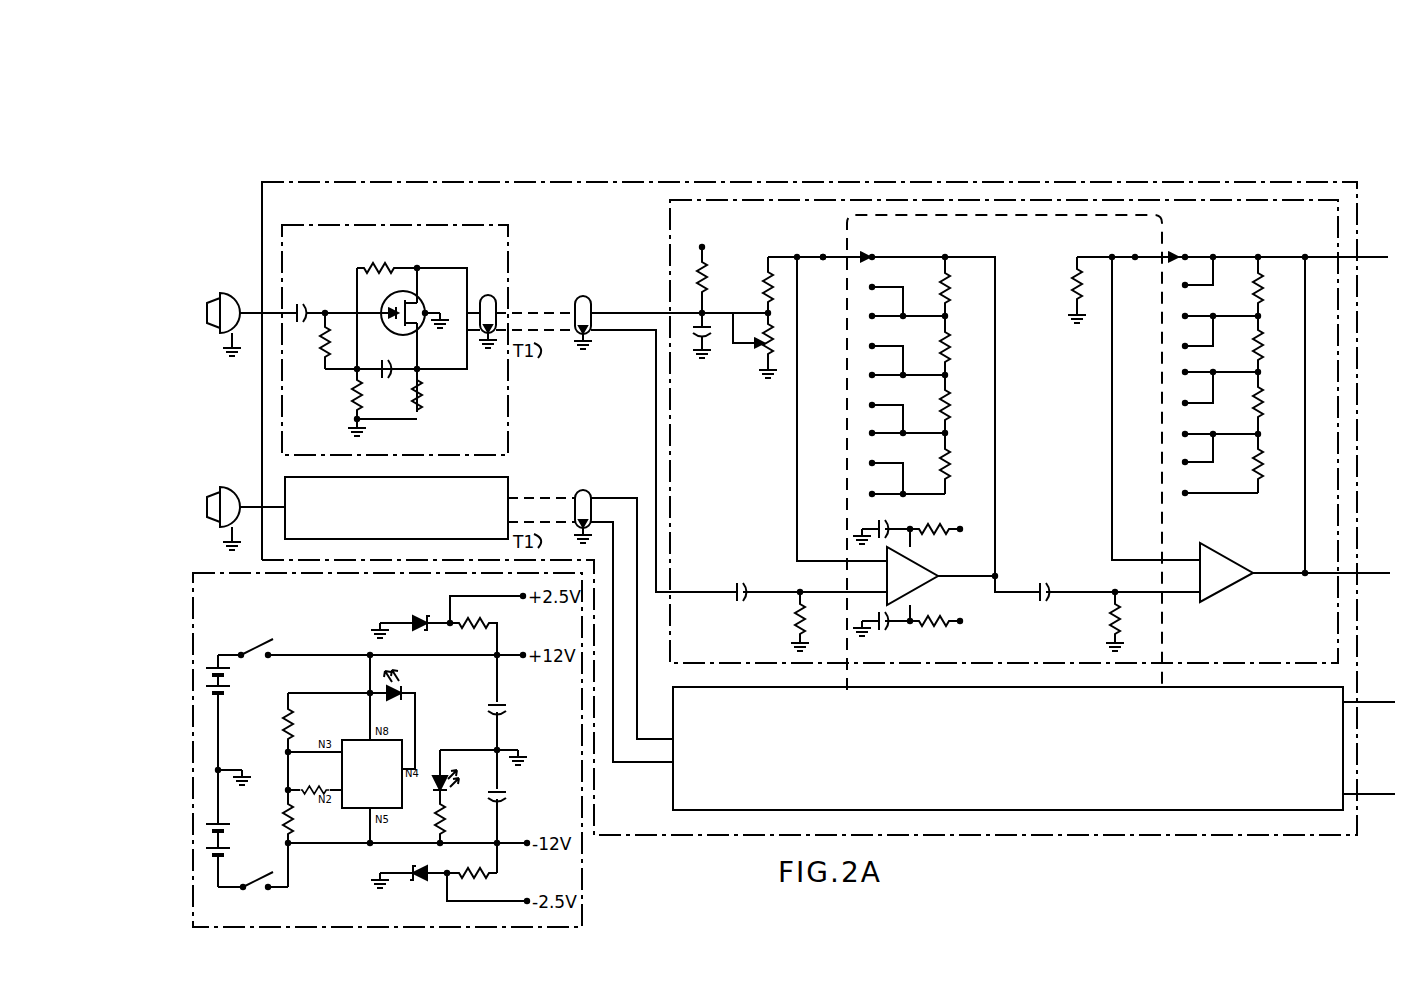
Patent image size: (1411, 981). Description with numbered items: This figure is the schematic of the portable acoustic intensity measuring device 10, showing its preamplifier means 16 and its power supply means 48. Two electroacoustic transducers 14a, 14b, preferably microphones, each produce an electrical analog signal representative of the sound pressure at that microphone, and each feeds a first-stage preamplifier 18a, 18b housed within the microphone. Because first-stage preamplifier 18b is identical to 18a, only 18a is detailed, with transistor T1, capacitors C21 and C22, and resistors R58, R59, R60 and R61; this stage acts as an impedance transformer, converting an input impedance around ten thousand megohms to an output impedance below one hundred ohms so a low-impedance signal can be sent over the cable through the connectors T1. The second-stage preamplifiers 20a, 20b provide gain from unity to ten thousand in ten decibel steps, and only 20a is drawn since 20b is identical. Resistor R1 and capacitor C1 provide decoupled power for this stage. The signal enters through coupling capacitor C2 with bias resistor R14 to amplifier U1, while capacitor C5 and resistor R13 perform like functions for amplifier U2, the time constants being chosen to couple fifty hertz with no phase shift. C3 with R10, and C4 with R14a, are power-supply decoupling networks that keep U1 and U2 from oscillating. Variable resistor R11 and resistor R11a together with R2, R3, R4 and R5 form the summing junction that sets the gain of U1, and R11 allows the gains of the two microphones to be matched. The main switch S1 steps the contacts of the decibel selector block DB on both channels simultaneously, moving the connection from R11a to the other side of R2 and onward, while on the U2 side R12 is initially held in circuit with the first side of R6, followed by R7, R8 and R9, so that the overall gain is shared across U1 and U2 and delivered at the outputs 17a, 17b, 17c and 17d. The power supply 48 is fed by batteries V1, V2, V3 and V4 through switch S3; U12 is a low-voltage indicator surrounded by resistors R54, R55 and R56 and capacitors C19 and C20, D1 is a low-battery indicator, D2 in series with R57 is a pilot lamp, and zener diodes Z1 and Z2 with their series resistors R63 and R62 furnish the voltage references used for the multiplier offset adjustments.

The portable acoustic intensity measuring device 10 is at (236, 196).
The preamplifier means 16 is at (262, 232).
The first electroacoustic transducer 14a is at (235, 293).
The second electroacoustic transducer 14b is at (235, 487).
The first-stage preamplifier 18a is at (490, 225).
The first-stage preamplifier 18b is at (488, 477).
The second-stage preamplifier 20a is at (670, 217).
The second-stage preamplifier 20b is at (668, 800).
The power supply means 48 is at (220, 573).
The first output 17a is at (1372, 256).
The second output 17b is at (1376, 571).
The third output 17c is at (1388, 694).
The fourth output 17d is at (1386, 794).
The transistor / connector T1 is at (408, 291).
The capacitor C21 is at (318, 310).
The capacitor C22 is at (393, 394).
The resistor R58 is at (380, 262).
The resistor R59 is at (322, 360).
The resistor R60 is at (352, 397).
The resistor R61 is at (423, 397).
The resistor R1 is at (696, 276).
The capacitor C1 is at (700, 352).
The resistor R11a is at (764, 280).
The variable resistor R11 is at (762, 358).
The main switch S1 is at (843, 252).
The decibel selector switch block DB is at (886, 244).
The resistor R2 is at (949, 300).
The resistor R3 is at (960, 355).
The resistor R4 is at (960, 412).
The resistor R5 is at (960, 470).
The resistor R10 is at (934, 522).
The amplifier U1 is at (902, 576).
The coupling capacitor C2 is at (736, 584).
The capacitor C3 is at (886, 526).
The capacitor C4 is at (888, 630).
The coupling capacitor C5 is at (1040, 584).
The bias resistor R14 is at (791, 616).
The resistor R14a is at (942, 629).
The bias resistor R13 is at (1107, 616).
The resistor R12 is at (1070, 291).
The resistor R6 is at (1282, 296).
The resistor R7 is at (1272, 360).
The resistor R8 is at (1272, 418).
The resistor R9 is at (1272, 470).
The amplifier U2 is at (1224, 572).
The zener diode Z1 is at (421, 614).
The zener diode Z2 is at (421, 883).
The resistor R63 is at (472, 628).
The resistor R62 is at (468, 879).
The power switch S3 is at (274, 901).
The battery V1 is at (226, 681).
The battery V2 is at (232, 724).
The battery V3 is at (232, 814).
The battery V4 is at (232, 860).
The resistor R54 is at (284, 722).
The resistor R55 is at (297, 820).
The resistor R56 is at (333, 787).
The resistor R57 is at (447, 818).
The low voltage indicator U12 is at (372, 774).
The low battery indicator D1 is at (406, 692).
The pilot lamp D2 is at (437, 785).
The capacitor C19 is at (502, 709).
The capacitor C20 is at (502, 805).